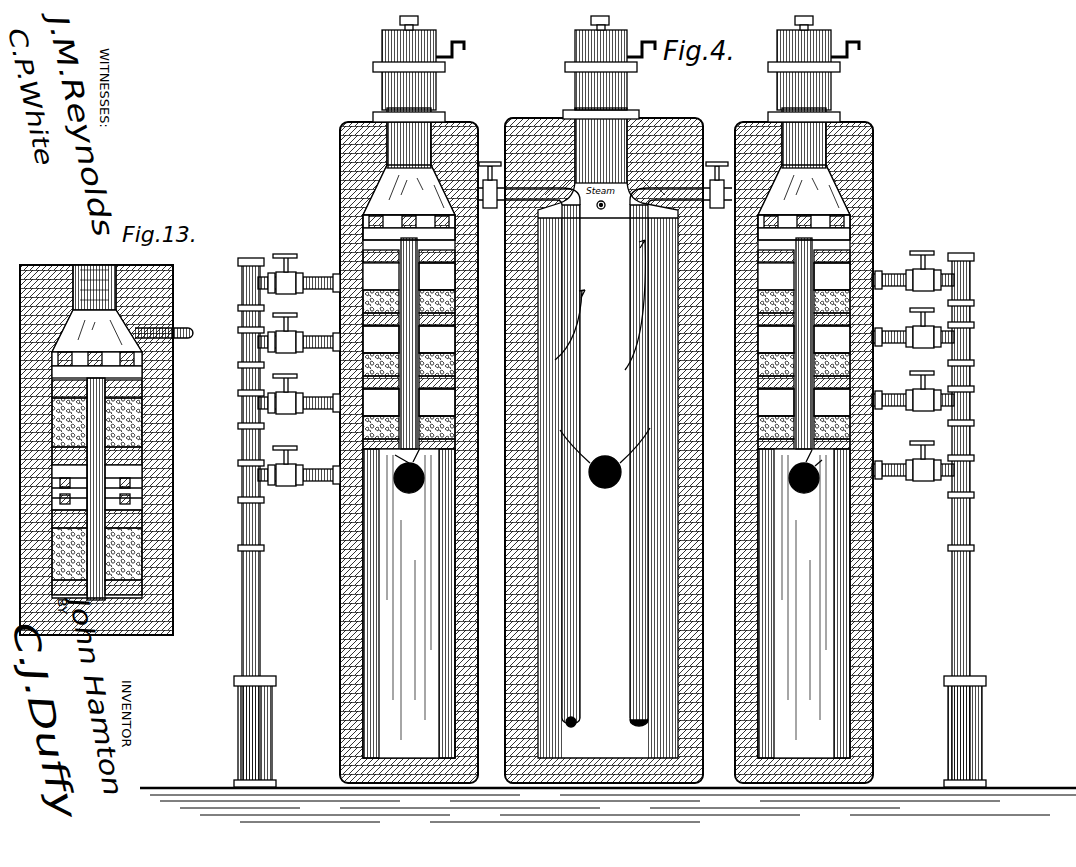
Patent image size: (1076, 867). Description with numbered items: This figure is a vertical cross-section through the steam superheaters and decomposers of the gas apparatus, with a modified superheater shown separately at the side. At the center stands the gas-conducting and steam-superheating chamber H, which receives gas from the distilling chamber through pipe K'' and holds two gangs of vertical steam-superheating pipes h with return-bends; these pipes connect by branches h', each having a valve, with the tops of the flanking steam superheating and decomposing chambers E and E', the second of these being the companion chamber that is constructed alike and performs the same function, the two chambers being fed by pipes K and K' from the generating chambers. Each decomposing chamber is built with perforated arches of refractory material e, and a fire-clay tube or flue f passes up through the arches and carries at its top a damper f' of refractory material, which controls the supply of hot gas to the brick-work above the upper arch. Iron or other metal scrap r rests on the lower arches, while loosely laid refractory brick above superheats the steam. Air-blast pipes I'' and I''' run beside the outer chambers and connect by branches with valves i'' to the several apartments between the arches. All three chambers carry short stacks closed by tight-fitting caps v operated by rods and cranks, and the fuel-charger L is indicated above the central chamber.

The steam superheating and decomposing chamber E is at (395, 399).
The second generator tower E' is at (814, 399).
The gas-conducting and steam-superheating chamber H is at (604, 450).
The fuel-charger L is at (560, 110).
The steam-superheating pipes h is at (605, 469).
The branches having valves h' is at (603, 174).
The tight-fitting caps v is at (647, 43).
The pipe K is at (409, 475).
The pipe K' is at (605, 481).
The pipe K'' is at (805, 476).
The damper f' is at (605, 228).
The perforated arches of refractory material e is at (634, 339).
The iron or other suitable metal scrap r is at (578, 371).
The fire-clay tube or flue f is at (578, 339).
The valves i'' is at (606, 368).
The air-blast pipe I'' is at (249, 522).
The air-blast pipe I''' is at (971, 520).